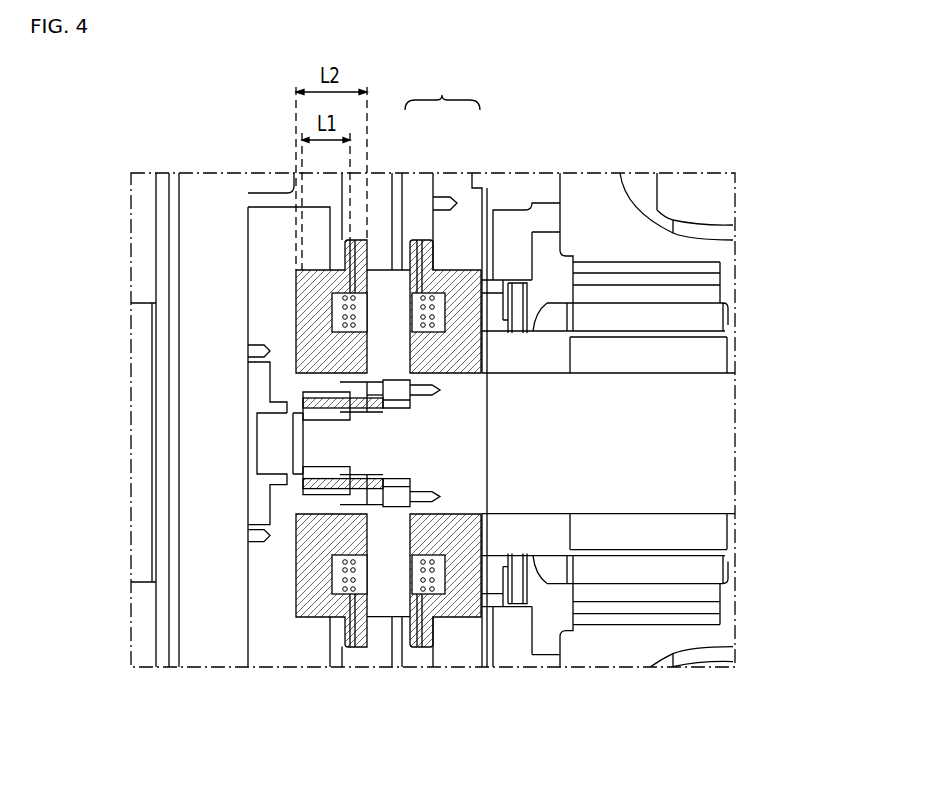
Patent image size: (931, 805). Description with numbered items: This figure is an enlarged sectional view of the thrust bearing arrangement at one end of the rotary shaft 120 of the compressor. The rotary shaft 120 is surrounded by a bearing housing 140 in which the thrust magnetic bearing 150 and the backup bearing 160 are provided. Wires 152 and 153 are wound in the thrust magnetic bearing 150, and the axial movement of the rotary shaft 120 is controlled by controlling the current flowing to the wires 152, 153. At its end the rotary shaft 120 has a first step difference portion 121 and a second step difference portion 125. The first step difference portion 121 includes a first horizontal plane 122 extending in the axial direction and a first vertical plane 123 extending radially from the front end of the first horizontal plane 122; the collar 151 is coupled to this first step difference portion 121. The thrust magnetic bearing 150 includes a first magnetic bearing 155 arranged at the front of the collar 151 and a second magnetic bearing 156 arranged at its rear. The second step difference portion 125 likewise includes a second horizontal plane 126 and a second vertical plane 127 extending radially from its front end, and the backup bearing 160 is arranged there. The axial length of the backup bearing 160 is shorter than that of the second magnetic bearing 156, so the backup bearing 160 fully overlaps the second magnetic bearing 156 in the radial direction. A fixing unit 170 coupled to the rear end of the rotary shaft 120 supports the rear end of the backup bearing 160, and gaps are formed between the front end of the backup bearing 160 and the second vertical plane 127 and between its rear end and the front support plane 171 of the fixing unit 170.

The rotary shaft 120 is at (712, 455).
The first step difference portion 121 is at (412, 408).
The first horizontal plane 122 is at (417, 433).
The first vertical plane 123 is at (450, 410).
The second step difference portion 125 is at (337, 447).
The second horizontal plane 126 is at (322, 480).
The second vertical plane 127 is at (383, 410).
The bearing housing 140 is at (262, 662).
The thrust magnetic bearing 150 is at (394, 356).
The collar 151 is at (380, 362).
The wire 152 is at (503, 275).
The wire 153 is at (343, 317).
The first magnetic bearing 155 is at (448, 277).
The second magnetic bearing 156 is at (335, 277).
The backup bearing 160 is at (272, 376).
The fixing unit 170 is at (263, 458).
The front support plane 171 is at (287, 410).